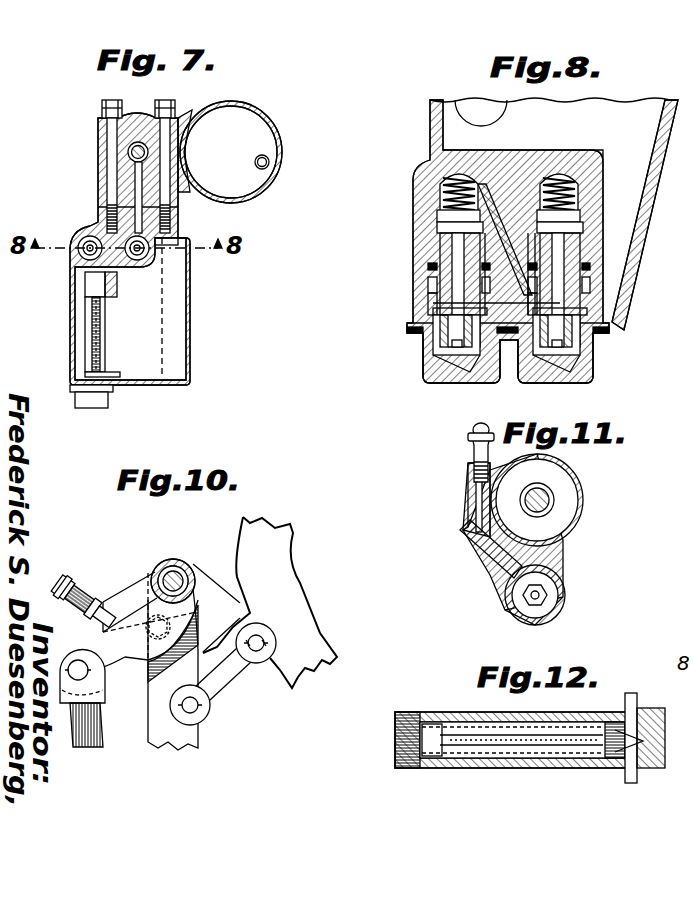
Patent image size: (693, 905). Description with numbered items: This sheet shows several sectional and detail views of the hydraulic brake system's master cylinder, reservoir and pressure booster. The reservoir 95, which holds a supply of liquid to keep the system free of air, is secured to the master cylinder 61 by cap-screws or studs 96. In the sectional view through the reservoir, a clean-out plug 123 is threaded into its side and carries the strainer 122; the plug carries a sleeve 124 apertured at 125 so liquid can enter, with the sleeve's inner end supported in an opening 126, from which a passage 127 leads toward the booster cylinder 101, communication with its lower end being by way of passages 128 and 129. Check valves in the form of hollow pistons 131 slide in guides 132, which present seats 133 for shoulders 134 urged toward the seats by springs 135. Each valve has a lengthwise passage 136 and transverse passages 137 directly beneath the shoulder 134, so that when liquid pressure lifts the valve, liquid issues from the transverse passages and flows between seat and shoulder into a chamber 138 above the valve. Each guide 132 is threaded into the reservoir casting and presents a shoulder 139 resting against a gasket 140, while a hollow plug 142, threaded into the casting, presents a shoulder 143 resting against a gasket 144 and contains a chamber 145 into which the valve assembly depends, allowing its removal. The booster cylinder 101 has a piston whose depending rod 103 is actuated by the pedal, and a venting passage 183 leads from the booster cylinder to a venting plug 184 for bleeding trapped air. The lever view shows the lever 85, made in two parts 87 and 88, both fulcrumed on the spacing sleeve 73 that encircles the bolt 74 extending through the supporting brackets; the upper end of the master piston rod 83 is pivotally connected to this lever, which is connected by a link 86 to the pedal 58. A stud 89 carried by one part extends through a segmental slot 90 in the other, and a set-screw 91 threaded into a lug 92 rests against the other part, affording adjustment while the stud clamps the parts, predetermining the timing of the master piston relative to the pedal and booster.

In FIG. 10, the pedal 58 is at (300, 590).
In FIG. 7, the master cylinder 61 is at (277, 136).
In FIG. 11, the master cylinder 61 is at (580, 482).
In FIG. 10, the spacing sleeve 73 is at (168, 566).
In FIG. 10, the bolt 74 is at (180, 575).
In FIG. 10, the piston rod 83 is at (95, 745).
In FIG. 10, the lever 85 is at (130, 602).
In FIG. 10, the link 86 is at (232, 678).
In FIG. 10, the lever part 87 is at (102, 631).
In FIG. 10, the lever part 88 is at (140, 668).
In FIG. 10, the stud 89 is at (171, 612).
In FIG. 10, the segmental slot 90 is at (147, 630).
In FIG. 10, the set-screw 91 is at (70, 577).
In FIG. 10, the lug 92 is at (65, 600).
In FIG. 7, the reservoir 95 is at (190, 296).
In FIG. 7, the cap-screws or studs 96 is at (107, 130).
In FIG. 11, the cylinder 101 is at (557, 607).
In FIG. 7, the depending rod 103 is at (128, 152).
In FIG. 7, the strainer 122 is at (100, 361).
In FIG. 12, the strainer 122 is at (548, 762).
In FIG. 7, the clean-out plug 123 is at (108, 395).
In FIG. 12, the clean-out plug 123 is at (637, 774).
In FIG. 7, the sleeve 124 is at (90, 339).
In FIG. 12, the sleeve 124 is at (403, 749).
In FIG. 7, the apertures 125 is at (103, 335).
In FIG. 12, the apertures 125 is at (440, 760).
In FIG. 7, the opening 126 is at (106, 286).
In FIG. 7, the passage 127 is at (80, 258).
In FIG. 8, the passage 127 is at (428, 300).
In FIG. 7, the passage 128 is at (106, 212).
In FIG. 8, the passage 128 is at (502, 280).
In FIG. 7, the passage 129 is at (135, 181).
In FIG. 8, the passage 129 is at (510, 220).
In FIG. 8, the hollow piston 131 is at (430, 264).
In FIG. 8, the guide 132 is at (436, 313).
In FIG. 8, the seat 133 is at (445, 230).
In FIG. 8, the shoulder 134 is at (440, 215).
In FIG. 8, the spring 135 is at (448, 178).
In FIG. 8, the lengthwise passage 136 is at (496, 306).
In FIG. 8, the transverse passage 137 is at (456, 240).
In FIG. 8, the chamber 138 is at (442, 194).
In FIG. 8, the shoulder 139 is at (430, 281).
In FIG. 8, the gasket 140 is at (525, 270).
In FIG. 8, the plug 142 is at (425, 372).
In FIG. 8, the shoulder 143 is at (436, 348).
In FIG. 8, the gasket 144 is at (420, 331).
In FIG. 8, the chamber 145 is at (448, 362).
In FIG. 11, the venting passage 183 is at (493, 553).
In FIG. 11, the venting plug 184 is at (472, 441).